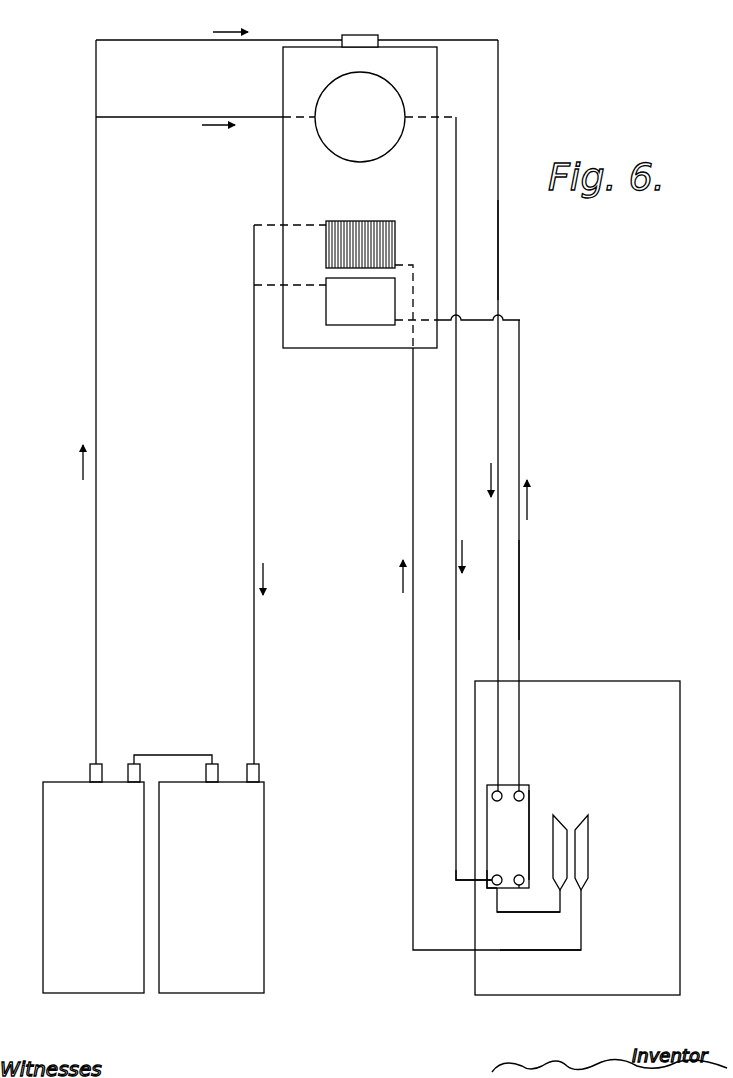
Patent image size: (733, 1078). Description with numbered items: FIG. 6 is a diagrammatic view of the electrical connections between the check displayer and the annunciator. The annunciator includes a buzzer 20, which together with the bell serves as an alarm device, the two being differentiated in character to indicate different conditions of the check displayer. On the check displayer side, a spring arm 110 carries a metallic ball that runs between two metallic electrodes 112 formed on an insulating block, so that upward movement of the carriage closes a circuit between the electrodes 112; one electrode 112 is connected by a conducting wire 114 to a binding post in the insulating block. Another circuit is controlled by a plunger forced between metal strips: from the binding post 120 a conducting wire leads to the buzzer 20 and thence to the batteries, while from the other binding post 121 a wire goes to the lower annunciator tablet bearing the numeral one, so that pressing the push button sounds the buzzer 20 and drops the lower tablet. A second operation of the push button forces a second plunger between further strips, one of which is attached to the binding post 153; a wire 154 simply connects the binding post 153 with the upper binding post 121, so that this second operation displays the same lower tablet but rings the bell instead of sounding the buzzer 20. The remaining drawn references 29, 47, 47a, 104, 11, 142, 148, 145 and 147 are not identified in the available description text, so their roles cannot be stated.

The buzzer 20 is at (344, 37).
The indicator lamp 29 is at (360, 117).
The resistance unit 47 is at (381, 234).
The resistance unit 47a is at (339, 318).
The spring arm 110 is at (498, 238).
The conductor 104 is at (519, 594).
The battery cells 11 is at (110, 885).
The metallic electrodes 112 is at (577, 838).
The binding post 120 is at (500, 790).
The binding post 121 is at (521, 790).
The wire 154 is at (527, 815).
The contact blades 142 is at (582, 815).
The conductor 148 is at (460, 881).
The conductor 145 is at (490, 889).
The binding post 153 is at (522, 900).
The conducting wire 114 is at (523, 913).
The conductor 147 is at (540, 951).